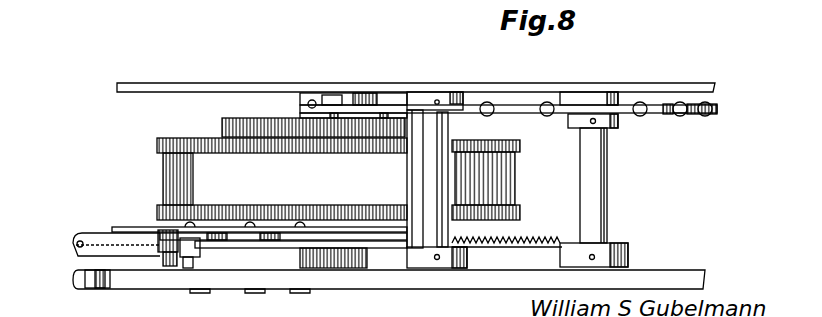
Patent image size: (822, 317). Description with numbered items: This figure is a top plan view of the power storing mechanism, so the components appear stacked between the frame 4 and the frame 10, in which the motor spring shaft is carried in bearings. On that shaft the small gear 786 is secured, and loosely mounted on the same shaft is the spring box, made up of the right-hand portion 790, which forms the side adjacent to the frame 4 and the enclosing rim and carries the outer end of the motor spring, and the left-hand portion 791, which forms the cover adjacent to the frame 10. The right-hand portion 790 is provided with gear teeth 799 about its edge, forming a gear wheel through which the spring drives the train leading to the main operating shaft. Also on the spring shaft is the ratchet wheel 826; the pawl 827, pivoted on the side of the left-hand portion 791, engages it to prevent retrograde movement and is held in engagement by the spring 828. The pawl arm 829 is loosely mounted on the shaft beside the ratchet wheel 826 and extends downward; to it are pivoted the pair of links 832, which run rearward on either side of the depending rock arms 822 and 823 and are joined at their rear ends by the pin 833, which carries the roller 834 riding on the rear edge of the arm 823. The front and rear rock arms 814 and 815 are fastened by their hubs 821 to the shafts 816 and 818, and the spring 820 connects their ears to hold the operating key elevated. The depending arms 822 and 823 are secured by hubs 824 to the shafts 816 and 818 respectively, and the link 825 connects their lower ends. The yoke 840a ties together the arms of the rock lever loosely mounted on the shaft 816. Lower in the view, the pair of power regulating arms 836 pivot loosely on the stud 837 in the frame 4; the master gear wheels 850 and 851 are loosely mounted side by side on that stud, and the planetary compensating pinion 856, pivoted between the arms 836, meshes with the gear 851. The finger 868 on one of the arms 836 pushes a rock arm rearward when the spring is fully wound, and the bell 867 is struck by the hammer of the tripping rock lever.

The frame 10 is at (192, 83).
The spring 828 is at (313, 105).
The pawl arm 829 is at (306, 106).
The pawl 827 is at (377, 137).
The hubs 824 is at (423, 103).
The front depending rock arm 822 is at (480, 105).
The pair of links 832 is at (530, 107).
The rear depending rock arm 823 is at (633, 110).
The link 825 is at (700, 103).
The roller 834 is at (695, 113).
The pin 833 is at (678, 114).
The ratchet wheel 826 is at (222, 130).
The left-hand portion of spring box 791 is at (381, 153).
The right-hand portion of spring box 790 is at (282, 186).
The yoke 840a is at (410, 196).
The shaft 816 is at (446, 170).
The gear teeth 799 is at (520, 212).
The shaft 818 is at (580, 186).
The hubs 821 is at (423, 257).
The rear rock arm 815 is at (468, 250).
The spring 820 is at (507, 254).
The frame 4 is at (327, 282).
The master gear wheel 850 is at (117, 279).
The planetary compensating gear pinion 856 is at (116, 244).
The bell 867 is at (77, 244).
The master gear wheel 851 is at (118, 238).
The power regulating arms 836 is at (160, 235).
The stud 837 is at (205, 265).
The finger 868 is at (192, 266).
The front rock arm 814 is at (240, 246).
The small gear 786 is at (370, 258).